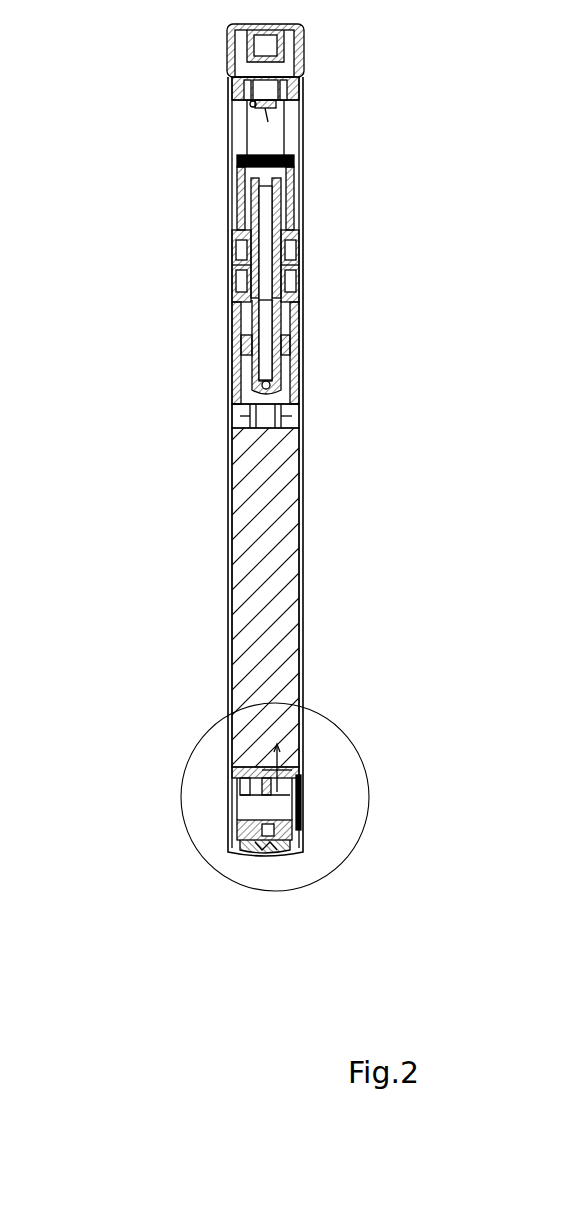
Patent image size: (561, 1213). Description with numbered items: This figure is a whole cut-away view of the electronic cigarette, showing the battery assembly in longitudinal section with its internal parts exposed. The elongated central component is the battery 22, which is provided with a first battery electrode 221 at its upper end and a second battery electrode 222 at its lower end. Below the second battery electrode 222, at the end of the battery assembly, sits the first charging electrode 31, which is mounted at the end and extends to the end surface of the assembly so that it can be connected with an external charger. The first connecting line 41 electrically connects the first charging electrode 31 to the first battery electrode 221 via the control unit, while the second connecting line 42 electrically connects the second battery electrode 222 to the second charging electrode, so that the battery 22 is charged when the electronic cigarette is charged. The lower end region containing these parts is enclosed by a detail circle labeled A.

The battery 22 is at (258, 557).
The first battery electrode 221 is at (254, 426).
The second battery electrode 222 is at (247, 782).
The first charging electrode 31 is at (263, 849).
The first connecting line 41 is at (237, 823).
The second connecting line 42 is at (298, 769).
The detail region A is at (362, 845).